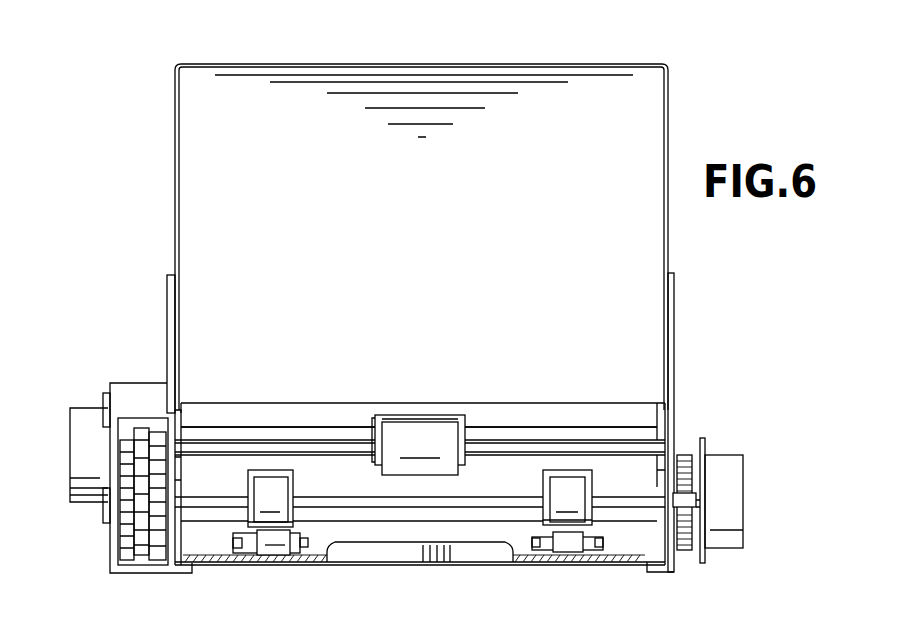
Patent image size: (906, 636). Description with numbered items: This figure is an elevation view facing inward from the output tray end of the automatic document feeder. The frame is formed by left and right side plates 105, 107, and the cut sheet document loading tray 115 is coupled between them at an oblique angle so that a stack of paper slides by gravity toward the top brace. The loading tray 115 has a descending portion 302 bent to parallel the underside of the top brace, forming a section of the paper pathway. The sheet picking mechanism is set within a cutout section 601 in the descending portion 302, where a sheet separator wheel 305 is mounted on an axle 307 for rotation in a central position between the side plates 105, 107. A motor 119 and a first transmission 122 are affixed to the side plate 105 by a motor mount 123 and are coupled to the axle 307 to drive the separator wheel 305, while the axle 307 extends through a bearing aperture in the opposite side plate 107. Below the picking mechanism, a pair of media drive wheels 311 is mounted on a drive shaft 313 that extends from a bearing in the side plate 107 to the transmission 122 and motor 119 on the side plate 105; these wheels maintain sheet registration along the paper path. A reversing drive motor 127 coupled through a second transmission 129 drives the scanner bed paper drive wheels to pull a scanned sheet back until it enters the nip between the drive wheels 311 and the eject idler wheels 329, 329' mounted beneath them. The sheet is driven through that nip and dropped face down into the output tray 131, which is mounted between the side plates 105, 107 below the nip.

The cut sheet document loading tray 115 is at (455, 76).
The left side plate 105 is at (167, 281).
The right side plate 107 is at (675, 290).
The motor 119 is at (90, 502).
The first transmission 122 is at (138, 412).
The motor mount 123 is at (110, 383).
The reversing drive motor 127 is at (727, 455).
The second transmission 129 is at (688, 552).
The output tray 131 is at (395, 566).
The descending portion 302 is at (500, 462).
The sheet separator wheel 305 is at (423, 425).
The axle 307 is at (627, 440).
The media drive wheel 311 is at (270, 470).
The drive shaft 313 is at (458, 510).
The eject idler wheel 329 is at (270, 579).
The eject idler wheel 329' is at (567, 580).
The cutout section 601 is at (375, 418).